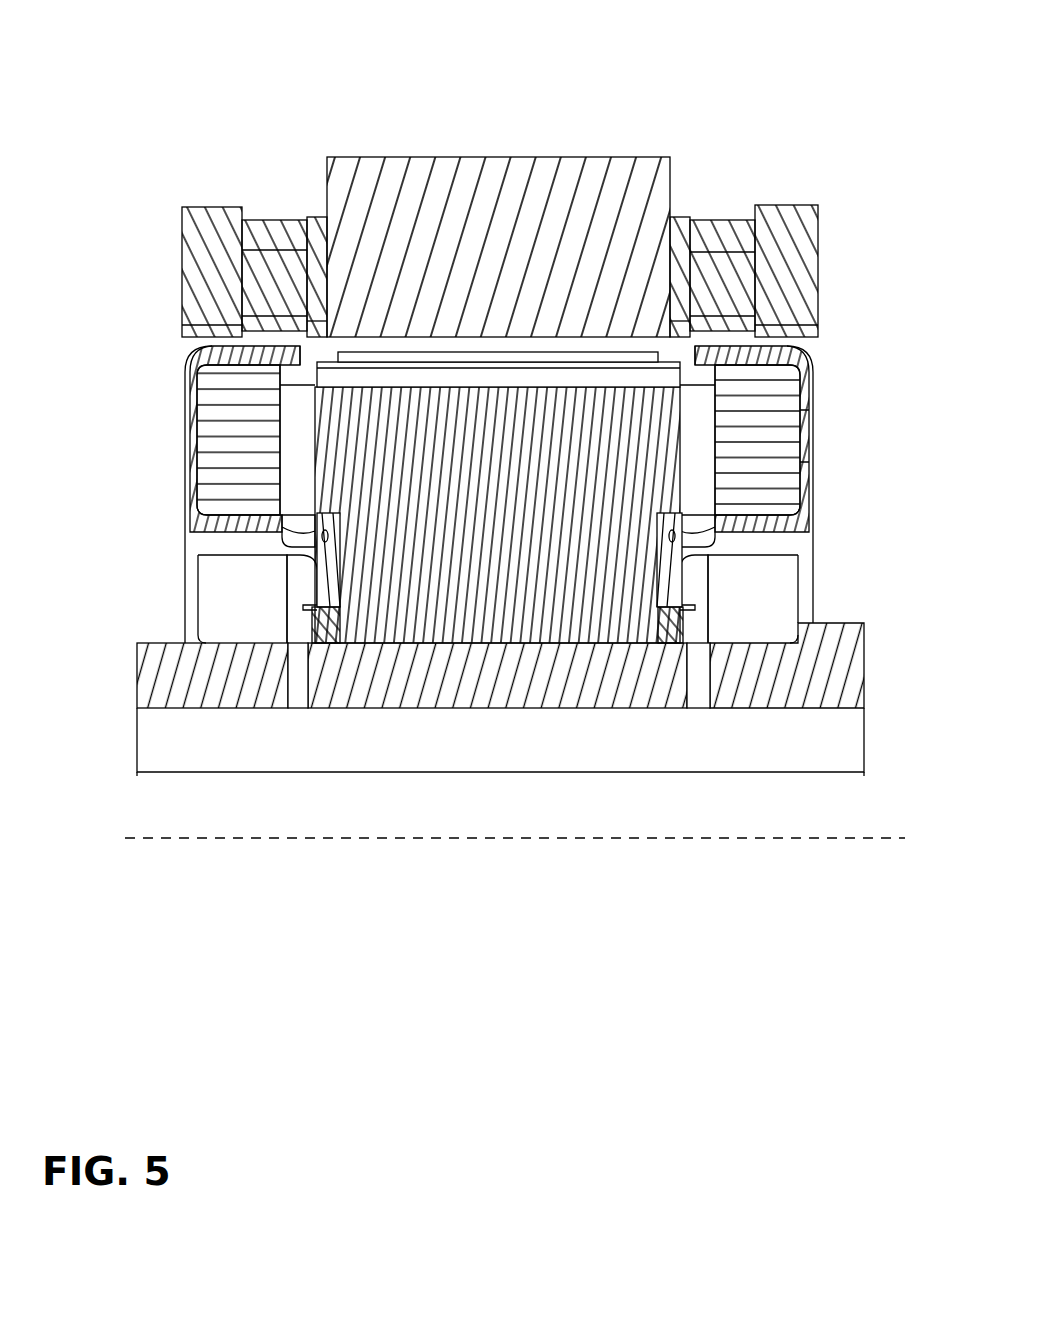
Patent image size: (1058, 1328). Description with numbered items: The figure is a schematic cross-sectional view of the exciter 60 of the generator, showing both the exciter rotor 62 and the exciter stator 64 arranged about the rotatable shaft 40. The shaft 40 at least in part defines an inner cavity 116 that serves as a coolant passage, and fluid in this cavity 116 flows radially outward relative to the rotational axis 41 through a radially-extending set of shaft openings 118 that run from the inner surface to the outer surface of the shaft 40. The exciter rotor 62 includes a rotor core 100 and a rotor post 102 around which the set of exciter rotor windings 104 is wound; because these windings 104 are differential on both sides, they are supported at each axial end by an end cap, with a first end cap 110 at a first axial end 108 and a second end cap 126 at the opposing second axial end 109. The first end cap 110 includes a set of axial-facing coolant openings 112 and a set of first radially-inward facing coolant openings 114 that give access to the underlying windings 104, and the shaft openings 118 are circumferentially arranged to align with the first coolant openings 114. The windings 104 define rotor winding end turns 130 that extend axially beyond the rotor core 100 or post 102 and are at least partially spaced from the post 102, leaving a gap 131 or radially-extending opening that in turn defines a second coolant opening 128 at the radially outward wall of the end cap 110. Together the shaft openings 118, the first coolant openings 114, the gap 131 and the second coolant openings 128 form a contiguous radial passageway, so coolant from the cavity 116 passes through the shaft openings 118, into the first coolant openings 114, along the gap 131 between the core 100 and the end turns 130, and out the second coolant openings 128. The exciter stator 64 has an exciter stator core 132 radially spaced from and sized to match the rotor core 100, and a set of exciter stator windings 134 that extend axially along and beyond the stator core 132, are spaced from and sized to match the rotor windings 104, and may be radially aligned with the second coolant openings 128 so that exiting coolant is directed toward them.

The exciter 60 is at (632, 34).
The exciter stator 64 is at (745, 160).
The exciter stator core 132 is at (371, 187).
The set of exciter stator windings 134 is at (213, 232).
The gap 131 is at (697, 427).
The second coolant opening 128 is at (683, 352).
The rotor winding end turns 130 is at (765, 390).
The set of exciter rotor windings 104 is at (810, 390).
The set of axial-facing coolant openings 112 is at (818, 433).
The first axial end 108 is at (828, 448).
The exciter rotor 62 is at (837, 468).
The first end cap 110 is at (807, 497).
The second axial end 109 is at (160, 430).
The second end cap 126 is at (188, 392).
The rotor post 102 is at (360, 497).
The set of first radially-inward facing coolant openings 114 is at (713, 537).
The rotor core 100 is at (372, 570).
The rotatable shaft 40 is at (838, 668).
The set of shaft openings 118 is at (305, 717).
The inner cavity 116 is at (734, 818).
The rotational axis 41 is at (850, 830).